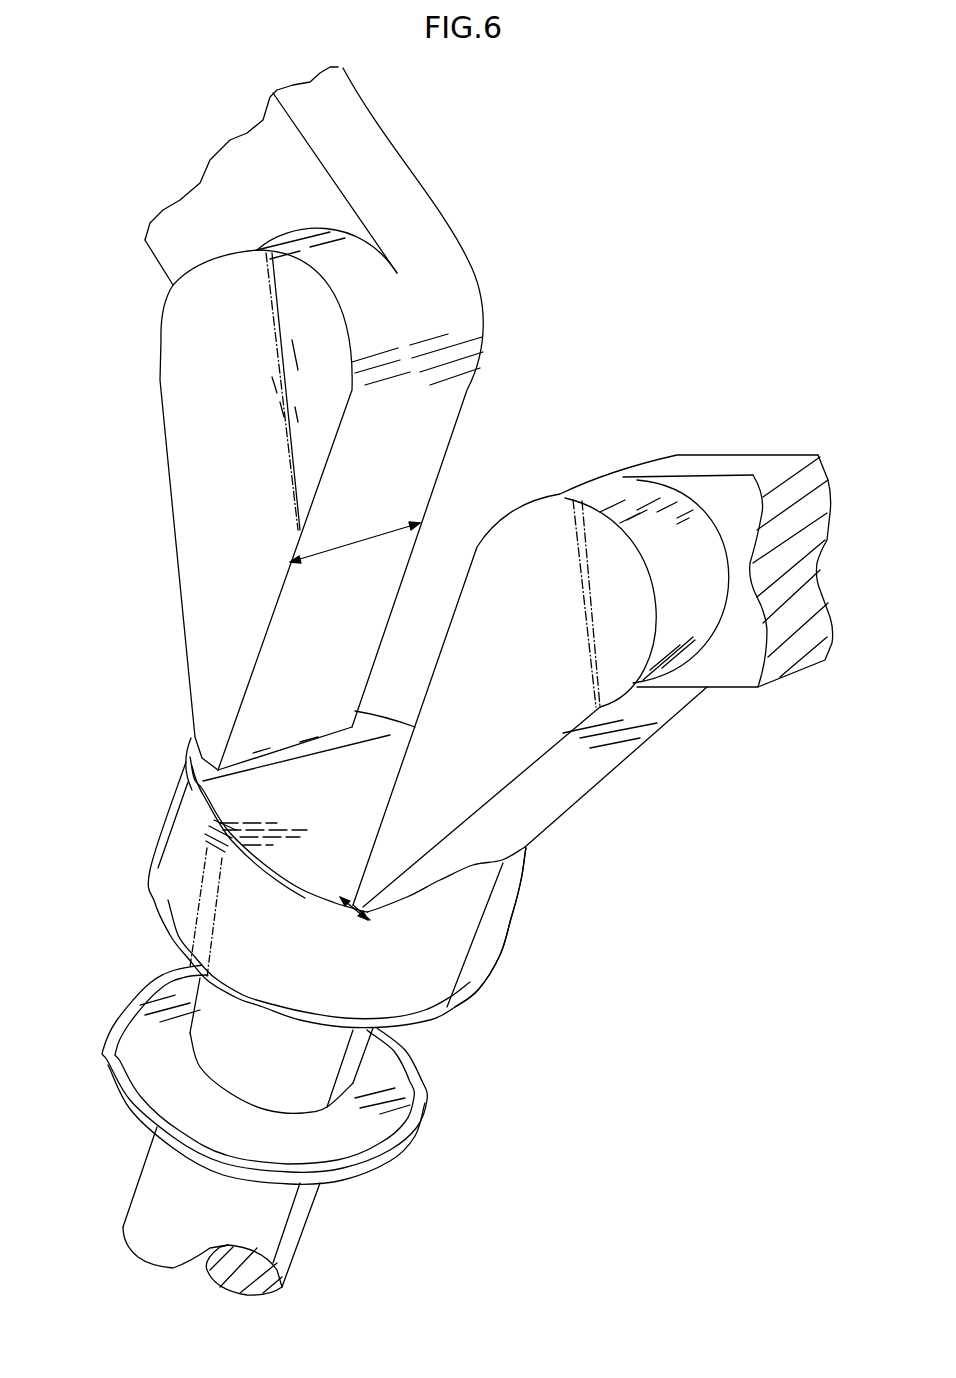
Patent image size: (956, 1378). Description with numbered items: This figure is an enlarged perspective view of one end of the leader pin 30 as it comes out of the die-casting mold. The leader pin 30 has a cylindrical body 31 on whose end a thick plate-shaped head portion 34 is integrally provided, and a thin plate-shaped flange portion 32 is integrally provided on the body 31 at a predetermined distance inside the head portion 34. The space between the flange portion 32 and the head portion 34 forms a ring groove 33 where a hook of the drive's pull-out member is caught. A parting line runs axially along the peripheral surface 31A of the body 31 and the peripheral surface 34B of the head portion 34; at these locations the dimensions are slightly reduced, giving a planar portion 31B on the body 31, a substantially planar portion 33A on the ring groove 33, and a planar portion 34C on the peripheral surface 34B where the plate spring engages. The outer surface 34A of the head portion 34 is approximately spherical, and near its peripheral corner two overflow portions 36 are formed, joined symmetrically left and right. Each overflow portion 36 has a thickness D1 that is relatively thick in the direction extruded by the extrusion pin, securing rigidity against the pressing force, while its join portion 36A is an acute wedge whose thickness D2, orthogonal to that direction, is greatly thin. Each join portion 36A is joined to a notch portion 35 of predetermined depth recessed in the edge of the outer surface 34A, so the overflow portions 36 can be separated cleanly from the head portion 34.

The leader pin 30 is at (510, 930).
The body 31 is at (160, 1200).
The peripheral surface of the body 31A is at (152, 1260).
The planar portion 31B is at (295, 1225).
The flange portion 32 is at (430, 1100).
The ring groove 33 is at (223, 1037).
The planar portion of the ring groove 33A is at (356, 1050).
The head portion 34 is at (188, 877).
The outer surface of the head portion 34A is at (385, 753).
The peripheral surface of the head portion 34B is at (178, 898).
The planar portion of the head portion 34C is at (483, 950).
The notch portion 35 is at (191, 752).
The overflow portion 36 is at (187, 345).
The join portion 36A is at (283, 752).
The thickness of the overflow portion D1 is at (357, 543).
The thickness of the join portion D2 is at (342, 925).